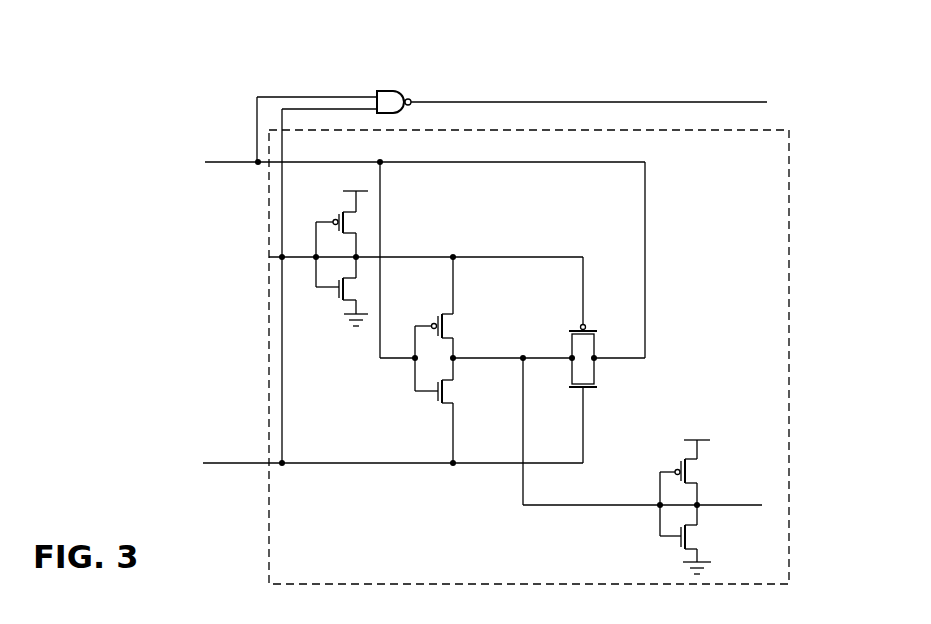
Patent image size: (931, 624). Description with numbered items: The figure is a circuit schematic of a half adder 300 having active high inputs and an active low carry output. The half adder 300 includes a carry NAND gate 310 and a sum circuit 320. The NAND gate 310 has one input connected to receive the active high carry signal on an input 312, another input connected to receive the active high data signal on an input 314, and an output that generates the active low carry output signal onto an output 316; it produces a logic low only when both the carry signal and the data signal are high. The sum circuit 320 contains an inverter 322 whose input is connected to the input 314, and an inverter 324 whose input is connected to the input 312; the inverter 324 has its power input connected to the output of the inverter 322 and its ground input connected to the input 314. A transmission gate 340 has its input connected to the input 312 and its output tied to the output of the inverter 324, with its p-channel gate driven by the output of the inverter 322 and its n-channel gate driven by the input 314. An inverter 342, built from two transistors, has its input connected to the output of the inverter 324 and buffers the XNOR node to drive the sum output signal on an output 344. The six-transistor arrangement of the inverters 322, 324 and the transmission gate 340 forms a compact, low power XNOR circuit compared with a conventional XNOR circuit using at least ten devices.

The half adder 300 is at (668, 63).
The carry NAND gate 310 is at (388, 89).
The input 312 is at (227, 168).
The input 314 is at (233, 468).
The output 316 is at (762, 103).
The sum circuit 320 is at (268, 251).
The inverter 322 is at (374, 237).
The inverter 324 is at (394, 385).
The transmission gate 340 is at (621, 371).
The inverter 342 is at (633, 522).
The output 344 is at (740, 500).